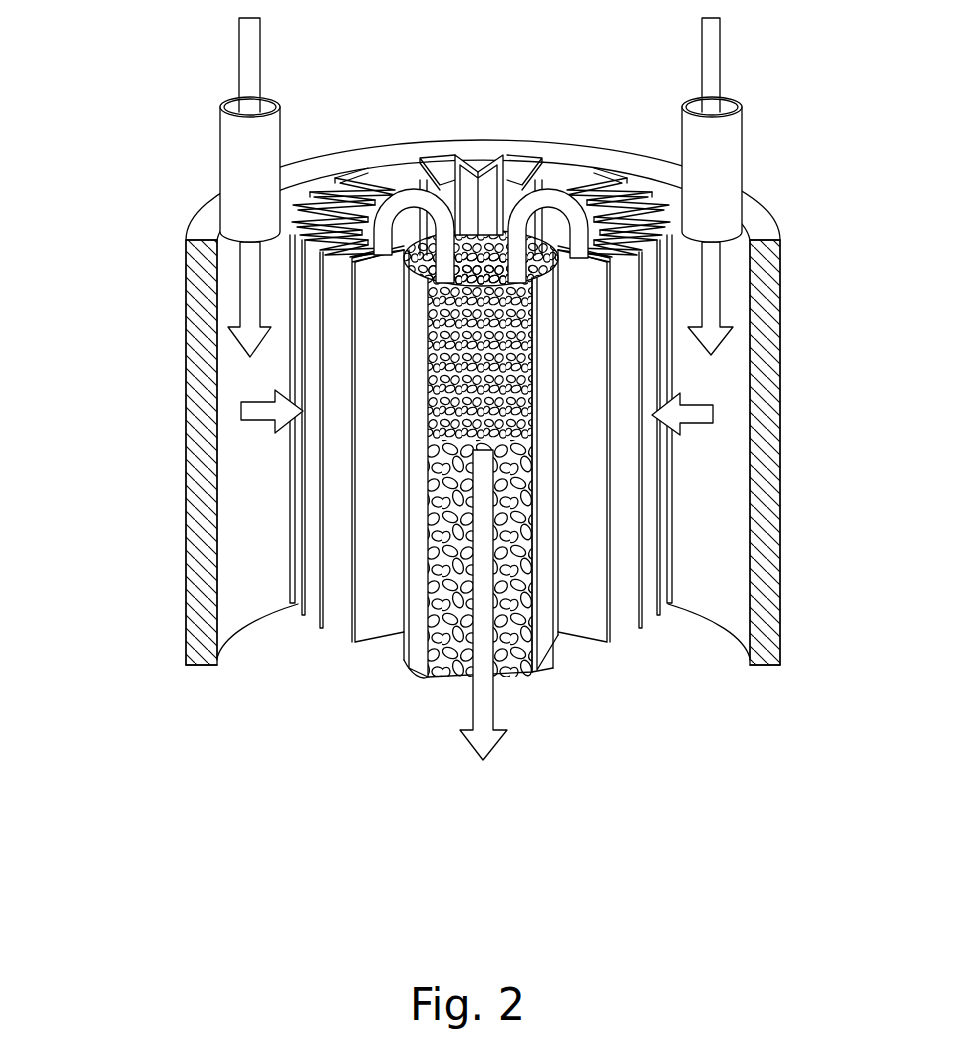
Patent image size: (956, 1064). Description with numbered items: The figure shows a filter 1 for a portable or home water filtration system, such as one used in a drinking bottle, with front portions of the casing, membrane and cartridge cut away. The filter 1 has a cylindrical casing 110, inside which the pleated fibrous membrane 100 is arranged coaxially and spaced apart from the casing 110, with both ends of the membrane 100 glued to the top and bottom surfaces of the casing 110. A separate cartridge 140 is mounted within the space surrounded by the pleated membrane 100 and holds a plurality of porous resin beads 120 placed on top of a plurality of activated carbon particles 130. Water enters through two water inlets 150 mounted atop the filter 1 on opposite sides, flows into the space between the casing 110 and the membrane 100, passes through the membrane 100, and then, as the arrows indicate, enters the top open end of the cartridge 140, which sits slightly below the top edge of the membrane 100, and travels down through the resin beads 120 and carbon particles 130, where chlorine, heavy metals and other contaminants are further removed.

The filter 1 is at (822, 347).
The fibrous membrane 100 is at (372, 592).
The cylindrical casing 110 is at (205, 519).
The porous resin beads 120 is at (440, 388).
The activated carbon particles 130 is at (515, 637).
The cartridge 140 is at (417, 650).
The water inlets 150 is at (232, 108).